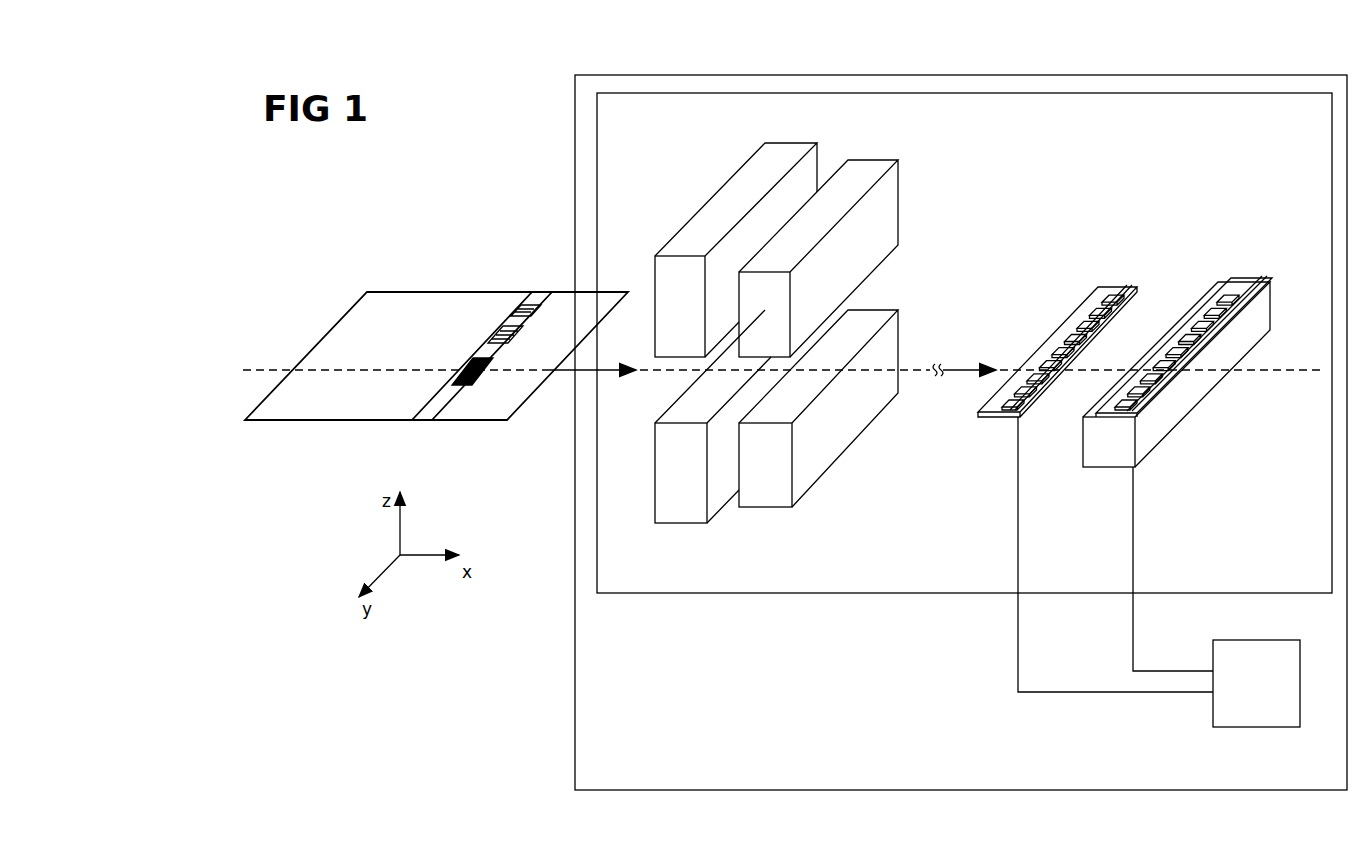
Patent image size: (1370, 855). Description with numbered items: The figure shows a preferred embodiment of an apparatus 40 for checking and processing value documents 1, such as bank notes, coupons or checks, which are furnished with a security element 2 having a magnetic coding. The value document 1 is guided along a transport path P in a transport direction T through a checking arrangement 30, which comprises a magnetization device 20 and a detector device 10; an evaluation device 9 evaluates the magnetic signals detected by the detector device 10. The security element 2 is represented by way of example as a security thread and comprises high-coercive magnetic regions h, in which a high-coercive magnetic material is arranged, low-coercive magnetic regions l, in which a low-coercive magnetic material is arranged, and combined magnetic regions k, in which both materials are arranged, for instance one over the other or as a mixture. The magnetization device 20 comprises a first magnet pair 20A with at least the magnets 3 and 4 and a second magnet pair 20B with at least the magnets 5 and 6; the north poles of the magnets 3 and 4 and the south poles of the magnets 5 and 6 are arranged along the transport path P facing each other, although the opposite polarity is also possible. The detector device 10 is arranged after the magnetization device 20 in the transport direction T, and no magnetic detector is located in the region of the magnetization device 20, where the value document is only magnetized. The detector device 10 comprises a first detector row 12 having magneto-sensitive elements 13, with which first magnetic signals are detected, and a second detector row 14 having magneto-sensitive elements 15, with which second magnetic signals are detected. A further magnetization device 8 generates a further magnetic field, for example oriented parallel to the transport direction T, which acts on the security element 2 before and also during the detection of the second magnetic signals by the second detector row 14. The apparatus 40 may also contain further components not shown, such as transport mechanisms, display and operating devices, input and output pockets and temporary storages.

The value document 1 is at (465, 292).
The security element 2 is at (430, 407).
The high-coercive magnetic regions h is at (536, 310).
The low-coercive magnetic regions l is at (512, 340).
The combined magnetic regions k is at (475, 378).
The transport path P is at (258, 368).
The transport direction T is at (773, 358).
The magnet 3 is at (655, 270).
The magnet 4 is at (655, 474).
The magnet 5 is at (898, 205).
The magnet 6 is at (898, 338).
The magnetization device 20 is at (778, 346).
The first magnet pair 20A is at (716, 314).
The second magnet pair 20B is at (840, 313).
The detector device 10 is at (1143, 453).
The first detector row 12 is at (1095, 453).
The magneto-sensitive elements 13 is at (1100, 306).
The second detector row 14 is at (1196, 443).
The further magnetization device 8 is at (1270, 297).
The magneto-sensitive elements 15 is at (1216, 326).
The evaluation device 9 is at (1259, 728).
The checking arrangement 30 is at (1063, 93).
The apparatus 40 is at (1118, 75).